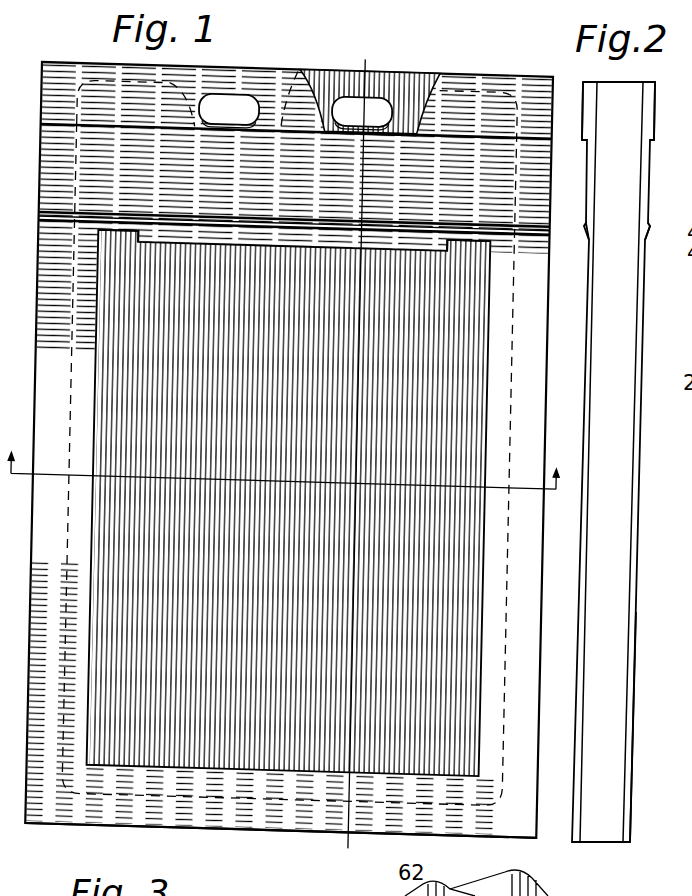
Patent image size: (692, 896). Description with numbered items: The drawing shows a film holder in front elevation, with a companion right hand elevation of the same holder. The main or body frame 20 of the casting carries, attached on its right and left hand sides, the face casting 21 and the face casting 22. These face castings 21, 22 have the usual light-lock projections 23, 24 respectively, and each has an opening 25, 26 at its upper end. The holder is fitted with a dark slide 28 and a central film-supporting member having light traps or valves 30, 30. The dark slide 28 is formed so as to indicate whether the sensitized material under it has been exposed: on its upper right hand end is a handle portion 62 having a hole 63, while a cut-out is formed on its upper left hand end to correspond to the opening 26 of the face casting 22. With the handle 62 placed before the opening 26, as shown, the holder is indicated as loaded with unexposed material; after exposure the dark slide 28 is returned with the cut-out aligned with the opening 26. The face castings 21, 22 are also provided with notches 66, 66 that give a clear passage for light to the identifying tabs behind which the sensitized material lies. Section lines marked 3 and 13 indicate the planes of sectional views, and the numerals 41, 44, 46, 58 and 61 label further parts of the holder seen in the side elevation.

In FIG. 2, the main or body frame 20 is at (606, 832).
In FIG. 1, the face casting 21 is at (289, 450).
In FIG. 2, the face casting 21 is at (637, 584).
In FIG. 1, the face casting 22 is at (311, 816).
In FIG. 2, the face casting 22 is at (575, 831).
In FIG. 2, the light-lock projection 23 is at (648, 229).
In FIG. 1, the light-lock projection 24 is at (412, 228).
In FIG. 2, the light-lock projection 24 is at (586, 228).
In FIG. 1, the opening 25 is at (233, 96).
In FIG. 1, the opening 26 is at (438, 110).
In FIG. 2, the opening 26 is at (637, 113).
In FIG. 1, the dark slide 28 is at (455, 641).
In FIG. 2, the dark slide 28 is at (633, 823).
In FIG. 2, the light trap or valve 30 is at (687, 357).
In FIG. 2, the layer 41 is at (687, 334).
In FIG. 2, the layer 44 is at (664, 298).
In FIG. 2, the layer 46 is at (687, 316).
In FIG. 2, the layer 58 is at (688, 407).
In FIG. 2, the layer 61 is at (687, 481).
In FIG. 1, the handle portion 62 is at (328, 88).
In FIG. 1, the hole 63 is at (351, 104).
In FIG. 2, the hole 63 is at (637, 152).
In FIG. 1, the notch 66 is at (126, 236).
In FIG. 1, the section line 3- 3 is at (376, 57).
In FIG. 1, the section line 13- 13 is at (293, 484).